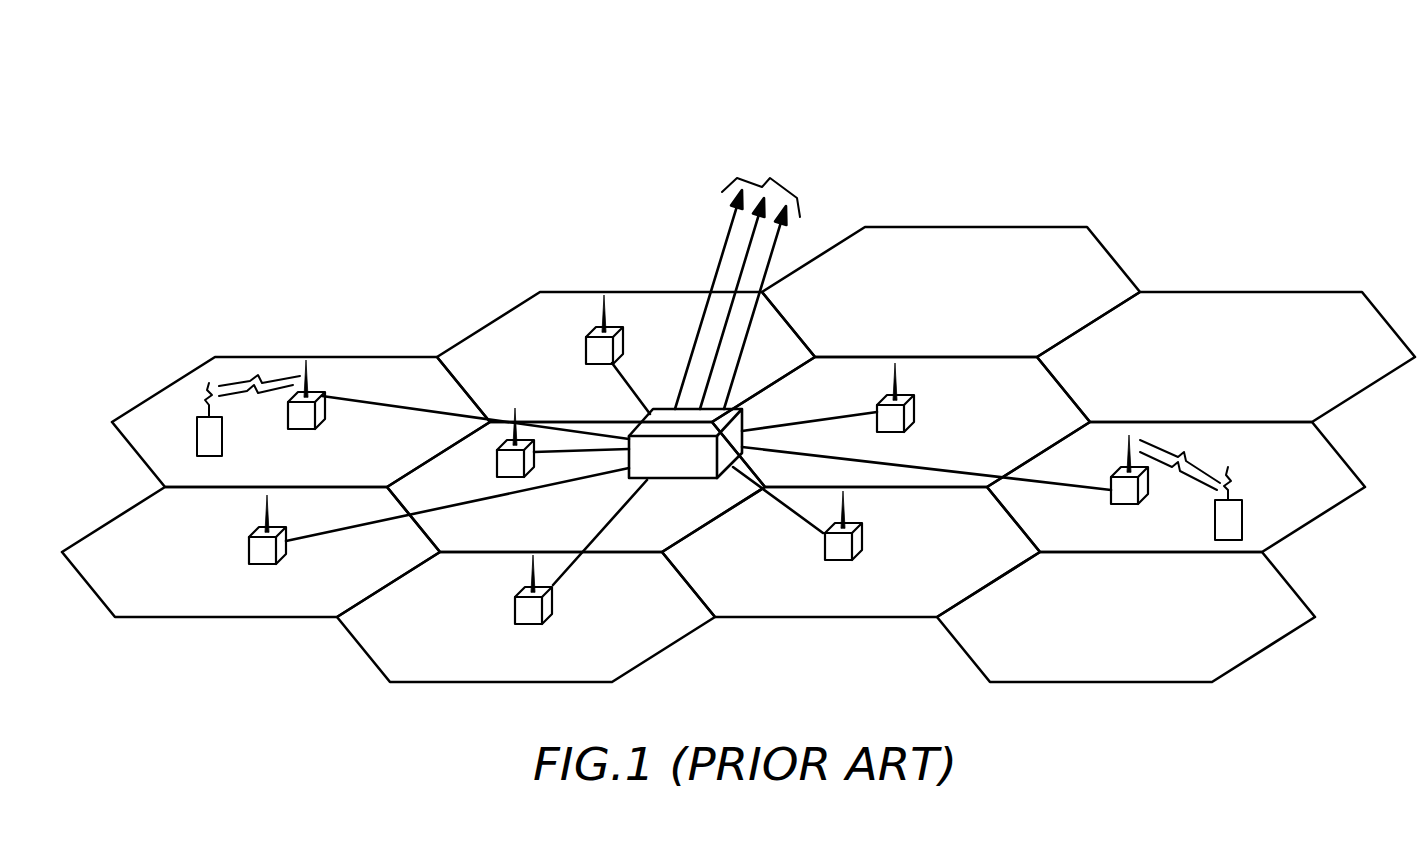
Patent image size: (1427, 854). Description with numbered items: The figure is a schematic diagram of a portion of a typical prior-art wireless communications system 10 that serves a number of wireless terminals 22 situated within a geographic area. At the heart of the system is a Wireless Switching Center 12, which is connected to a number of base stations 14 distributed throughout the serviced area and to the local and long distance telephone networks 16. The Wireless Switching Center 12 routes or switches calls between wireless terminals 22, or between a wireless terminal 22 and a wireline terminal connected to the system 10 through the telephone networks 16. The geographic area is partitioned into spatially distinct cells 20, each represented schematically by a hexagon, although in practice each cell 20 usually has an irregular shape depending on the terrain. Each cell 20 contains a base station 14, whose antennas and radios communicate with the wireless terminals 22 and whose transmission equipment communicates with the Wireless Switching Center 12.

The wireless communications system 10 is at (1055, 135).
The Wireless Switching Center 12 is at (741, 415).
The base station 14 is at (907, 411).
The local and long distance telephone networks 16 is at (805, 115).
The cell 20 is at (846, 359).
The wireless terminal 22 is at (212, 438).